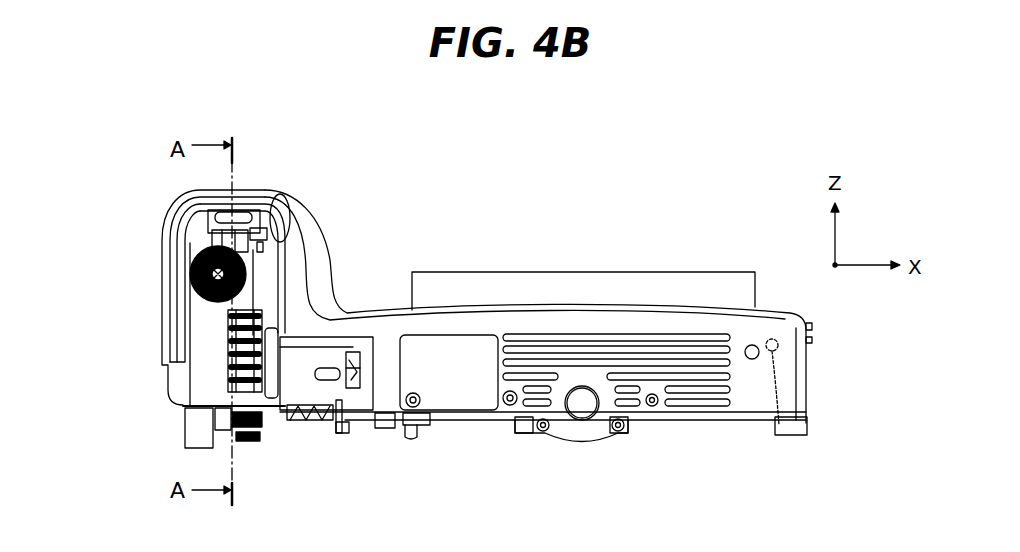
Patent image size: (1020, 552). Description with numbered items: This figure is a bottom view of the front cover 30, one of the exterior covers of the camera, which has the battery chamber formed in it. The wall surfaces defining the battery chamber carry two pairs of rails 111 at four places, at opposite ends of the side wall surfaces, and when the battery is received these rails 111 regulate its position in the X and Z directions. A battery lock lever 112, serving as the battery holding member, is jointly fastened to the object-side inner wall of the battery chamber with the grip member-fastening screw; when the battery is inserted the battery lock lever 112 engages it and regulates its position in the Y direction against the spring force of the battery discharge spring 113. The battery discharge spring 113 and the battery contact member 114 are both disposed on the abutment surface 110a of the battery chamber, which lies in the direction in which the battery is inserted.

The front cover 30 is at (375, 328).
The abutment surface 110a is at (212, 324).
The rail 111 is at (197, 234).
The battery lock lever 112 is at (196, 198).
The battery discharge spring 113 is at (190, 265).
The battery contact member 114 is at (267, 363).